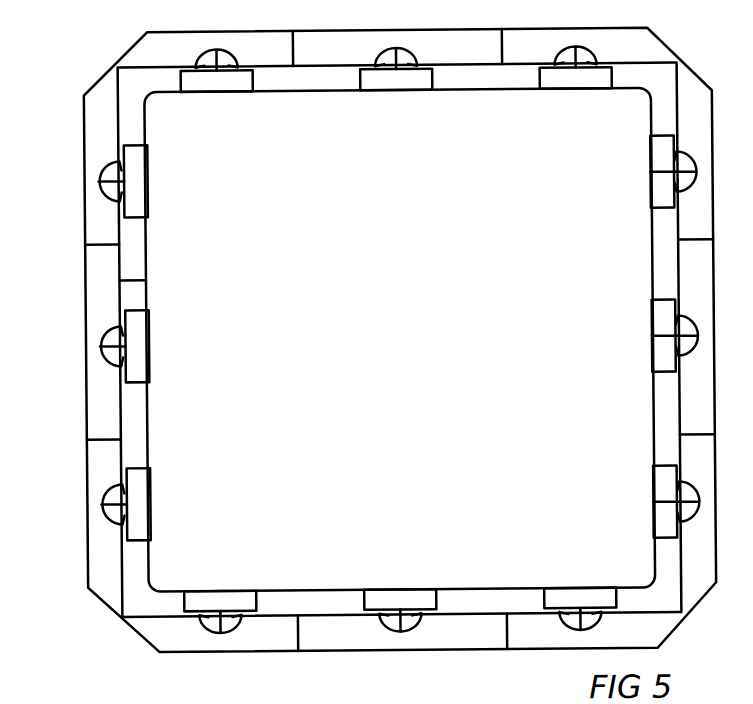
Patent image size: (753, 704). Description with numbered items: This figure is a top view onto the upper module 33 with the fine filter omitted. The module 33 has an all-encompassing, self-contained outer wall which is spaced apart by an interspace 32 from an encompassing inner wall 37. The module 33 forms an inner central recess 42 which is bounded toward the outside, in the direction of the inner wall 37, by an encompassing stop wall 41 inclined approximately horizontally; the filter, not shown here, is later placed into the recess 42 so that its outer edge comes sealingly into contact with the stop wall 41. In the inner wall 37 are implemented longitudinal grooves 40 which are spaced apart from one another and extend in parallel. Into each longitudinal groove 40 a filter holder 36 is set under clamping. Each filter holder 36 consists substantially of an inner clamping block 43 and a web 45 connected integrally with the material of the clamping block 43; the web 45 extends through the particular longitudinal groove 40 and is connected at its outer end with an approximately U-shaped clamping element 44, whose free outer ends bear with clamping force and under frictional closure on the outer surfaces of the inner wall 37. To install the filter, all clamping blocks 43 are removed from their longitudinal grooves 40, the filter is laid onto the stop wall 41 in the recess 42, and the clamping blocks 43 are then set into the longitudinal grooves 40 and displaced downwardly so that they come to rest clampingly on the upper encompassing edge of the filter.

The interspace 32 is at (102, 394).
The module 33 is at (85, 300).
The filter holder 36 is at (144, 347).
The inner wall 37 is at (144, 283).
The longitudinal groove 40 is at (220, 618).
The stop wall 41 is at (137, 426).
The central recess 42 is at (401, 335).
The clamping block 43 is at (396, 595).
The clamping element 44 is at (414, 628).
The web 45 is at (386, 630).